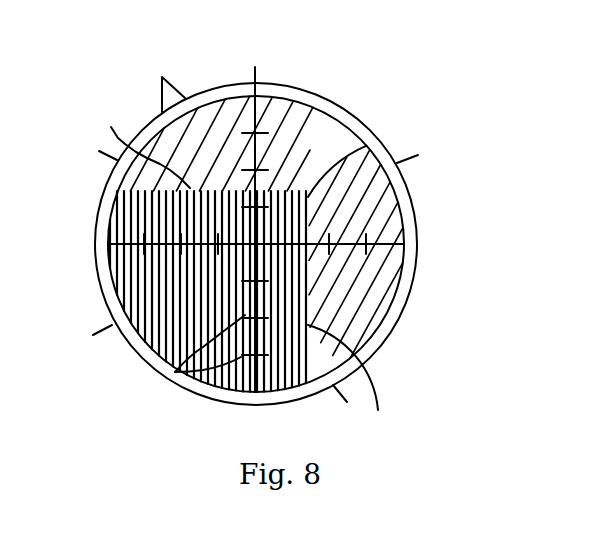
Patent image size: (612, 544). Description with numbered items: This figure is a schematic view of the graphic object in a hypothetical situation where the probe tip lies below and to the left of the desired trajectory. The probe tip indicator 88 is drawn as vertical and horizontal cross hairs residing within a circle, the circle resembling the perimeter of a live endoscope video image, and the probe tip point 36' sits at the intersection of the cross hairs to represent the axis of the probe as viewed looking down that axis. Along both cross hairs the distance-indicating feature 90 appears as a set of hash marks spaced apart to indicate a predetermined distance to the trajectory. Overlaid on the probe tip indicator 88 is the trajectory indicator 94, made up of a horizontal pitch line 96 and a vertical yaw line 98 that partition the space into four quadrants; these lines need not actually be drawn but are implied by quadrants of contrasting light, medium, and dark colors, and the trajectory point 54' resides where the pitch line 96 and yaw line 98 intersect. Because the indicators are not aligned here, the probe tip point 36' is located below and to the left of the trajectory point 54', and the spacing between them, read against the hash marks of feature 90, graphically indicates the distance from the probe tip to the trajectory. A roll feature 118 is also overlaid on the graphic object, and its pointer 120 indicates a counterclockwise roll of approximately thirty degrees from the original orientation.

The probe tip point 36' is at (218, 229).
The trajectory point 54' is at (365, 150).
The probe tip indicator 88 is at (112, 202).
The distance-indicating feature 90 is at (175, 372).
The trajectory indicator 94 is at (310, 113).
The horizontal pitch line 96 is at (143, 145).
The vertical yaw line 98 is at (350, 381).
The roll feature 118 is at (385, 338).
The pointer 120 is at (181, 88).